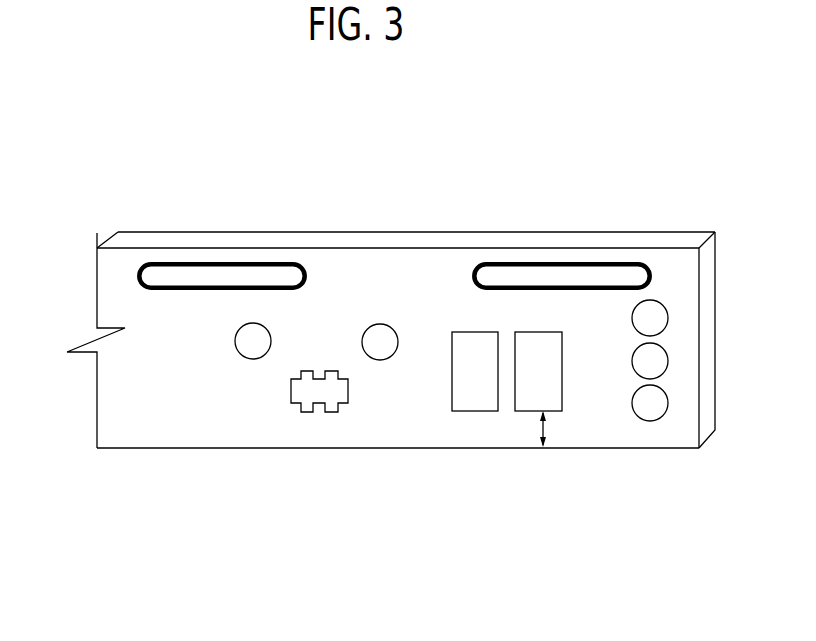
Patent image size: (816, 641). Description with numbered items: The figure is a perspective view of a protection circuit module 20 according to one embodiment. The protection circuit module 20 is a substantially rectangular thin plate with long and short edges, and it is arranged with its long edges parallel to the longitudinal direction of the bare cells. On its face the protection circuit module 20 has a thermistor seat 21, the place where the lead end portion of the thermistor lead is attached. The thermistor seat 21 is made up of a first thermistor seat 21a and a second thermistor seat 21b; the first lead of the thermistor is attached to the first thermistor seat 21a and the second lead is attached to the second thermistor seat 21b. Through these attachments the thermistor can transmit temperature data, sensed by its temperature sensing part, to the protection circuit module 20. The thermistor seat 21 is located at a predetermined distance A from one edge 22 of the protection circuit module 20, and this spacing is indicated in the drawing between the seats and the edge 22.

The protection circuit module 20 is at (606, 194).
The thermistor seat 21 is at (492, 267).
The first thermistor seat 21a is at (467, 342).
The second thermistor seat 21b is at (543, 342).
The edge of the protection circuit module 22 is at (501, 449).
The distance A is at (543, 430).